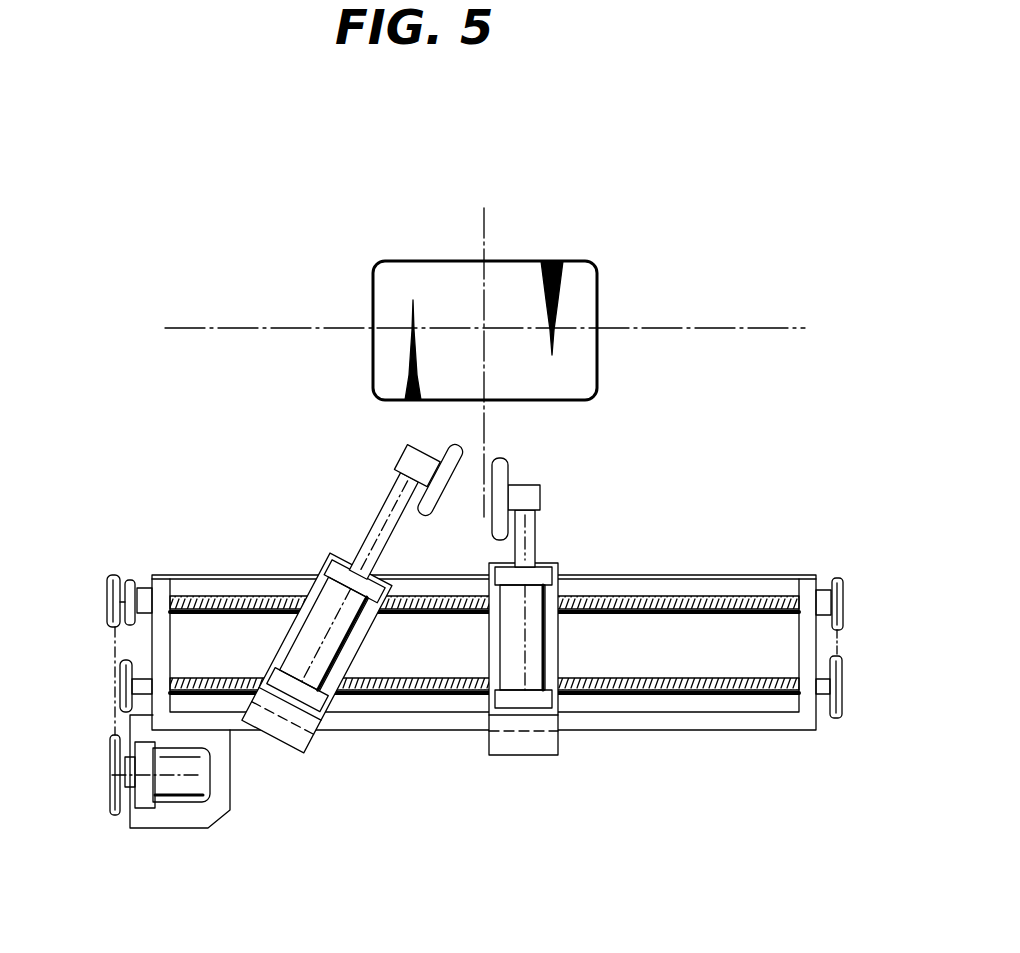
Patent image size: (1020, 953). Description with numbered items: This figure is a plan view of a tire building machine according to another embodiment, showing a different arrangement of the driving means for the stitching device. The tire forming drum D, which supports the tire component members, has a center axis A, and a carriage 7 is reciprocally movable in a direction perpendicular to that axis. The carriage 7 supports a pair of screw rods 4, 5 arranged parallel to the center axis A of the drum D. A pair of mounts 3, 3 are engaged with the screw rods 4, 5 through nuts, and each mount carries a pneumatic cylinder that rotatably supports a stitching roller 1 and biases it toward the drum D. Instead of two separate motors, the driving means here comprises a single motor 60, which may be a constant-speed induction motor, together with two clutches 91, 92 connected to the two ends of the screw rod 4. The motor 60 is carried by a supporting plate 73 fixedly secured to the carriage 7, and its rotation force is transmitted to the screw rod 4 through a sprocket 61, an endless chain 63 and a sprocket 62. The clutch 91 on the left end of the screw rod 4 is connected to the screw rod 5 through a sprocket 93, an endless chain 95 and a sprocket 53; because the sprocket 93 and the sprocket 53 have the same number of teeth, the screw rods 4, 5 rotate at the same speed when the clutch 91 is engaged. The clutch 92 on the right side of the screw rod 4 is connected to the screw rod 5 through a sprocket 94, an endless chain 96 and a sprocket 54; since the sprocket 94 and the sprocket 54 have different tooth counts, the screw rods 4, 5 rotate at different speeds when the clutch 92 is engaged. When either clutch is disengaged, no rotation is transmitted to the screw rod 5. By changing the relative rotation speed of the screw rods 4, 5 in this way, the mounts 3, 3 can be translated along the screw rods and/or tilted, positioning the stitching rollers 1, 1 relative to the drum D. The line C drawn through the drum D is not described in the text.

The stitching roller 1 is at (455, 446).
The mount 3 is at (283, 734).
The screw rod 4 is at (682, 596).
The screw rod 5 is at (697, 695).
The carriage 7 is at (403, 722).
The sprocket 53 is at (125, 708).
The sprocket 54 is at (845, 705).
The motor 60 is at (198, 780).
The sprocket 61 is at (110, 767).
The sprocket 62 is at (108, 592).
The endless chain 63 is at (113, 656).
The supporting plate 73 is at (173, 818).
The clutch 91 is at (143, 588).
The clutch 92 is at (830, 590).
The sprocket 93 is at (128, 580).
The sprocket 94 is at (840, 578).
The endless chain 95 is at (116, 632).
The endless chain 96 is at (841, 640).
The center axis A is at (745, 326).
The center line C is at (486, 218).
The tire forming drum D is at (581, 262).